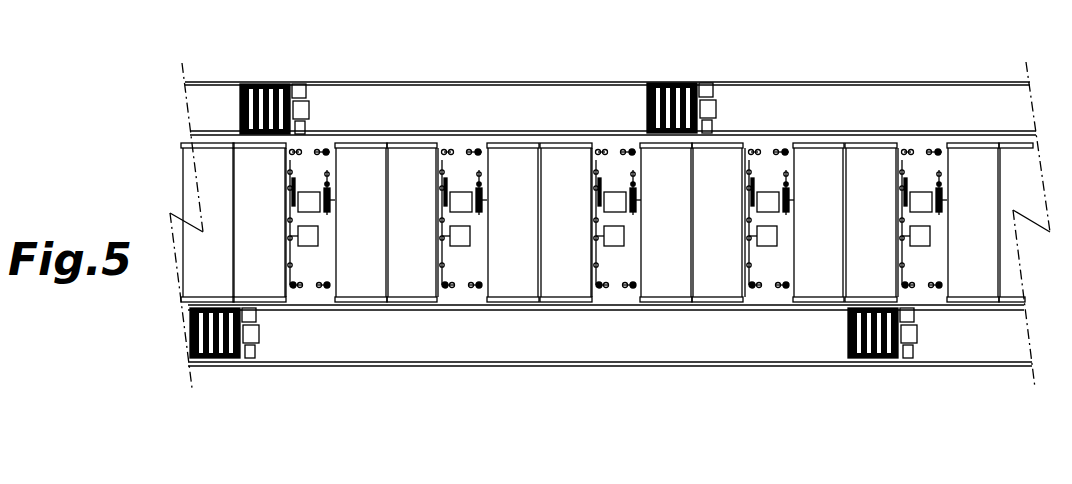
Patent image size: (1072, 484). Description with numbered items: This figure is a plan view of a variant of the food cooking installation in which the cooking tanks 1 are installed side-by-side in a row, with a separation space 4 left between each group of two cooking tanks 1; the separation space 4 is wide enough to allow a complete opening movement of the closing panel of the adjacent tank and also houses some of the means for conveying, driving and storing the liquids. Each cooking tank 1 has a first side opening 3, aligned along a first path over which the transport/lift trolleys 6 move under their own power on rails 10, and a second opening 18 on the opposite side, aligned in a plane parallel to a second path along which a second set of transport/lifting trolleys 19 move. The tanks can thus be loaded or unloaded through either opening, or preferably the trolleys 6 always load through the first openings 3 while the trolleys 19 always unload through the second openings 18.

The cooking tank 1 is at (518, 228).
The side opening 3 is at (568, 303).
The separation space 4 is at (767, 172).
The transport/lift trolley 6 is at (254, 322).
The rails 10 is at (843, 82).
The second opening 18 is at (520, 140).
The second set of transport/lifting trolleys 19 is at (268, 84).